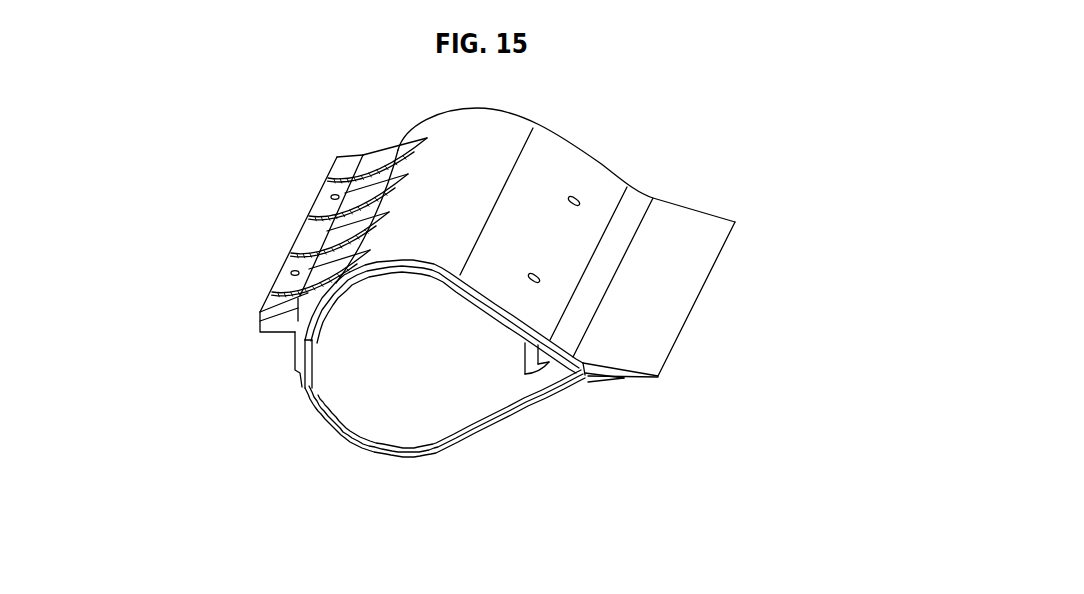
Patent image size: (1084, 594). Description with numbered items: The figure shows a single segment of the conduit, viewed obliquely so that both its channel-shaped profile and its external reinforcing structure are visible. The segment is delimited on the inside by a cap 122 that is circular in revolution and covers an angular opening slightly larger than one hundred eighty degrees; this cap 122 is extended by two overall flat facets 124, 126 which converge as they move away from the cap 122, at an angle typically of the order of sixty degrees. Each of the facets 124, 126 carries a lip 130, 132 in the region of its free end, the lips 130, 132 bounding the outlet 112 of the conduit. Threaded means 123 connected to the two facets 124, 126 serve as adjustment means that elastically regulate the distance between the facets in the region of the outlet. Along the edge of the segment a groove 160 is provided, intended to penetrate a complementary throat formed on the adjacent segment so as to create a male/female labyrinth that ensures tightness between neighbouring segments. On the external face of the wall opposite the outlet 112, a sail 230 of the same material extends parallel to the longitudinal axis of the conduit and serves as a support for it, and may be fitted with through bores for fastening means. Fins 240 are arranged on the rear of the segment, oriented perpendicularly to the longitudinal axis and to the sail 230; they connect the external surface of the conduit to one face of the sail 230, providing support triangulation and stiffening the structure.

The outlet 112 is at (626, 377).
The cap 122 is at (338, 323).
The threaded means 123 is at (517, 350).
The facet 124 is at (496, 426).
The facet 126 is at (477, 293).
The lip 130 is at (653, 270).
The lip 132 is at (603, 388).
The groove 160 is at (556, 358).
The sail 230 is at (312, 235).
The fins 240 is at (365, 172).